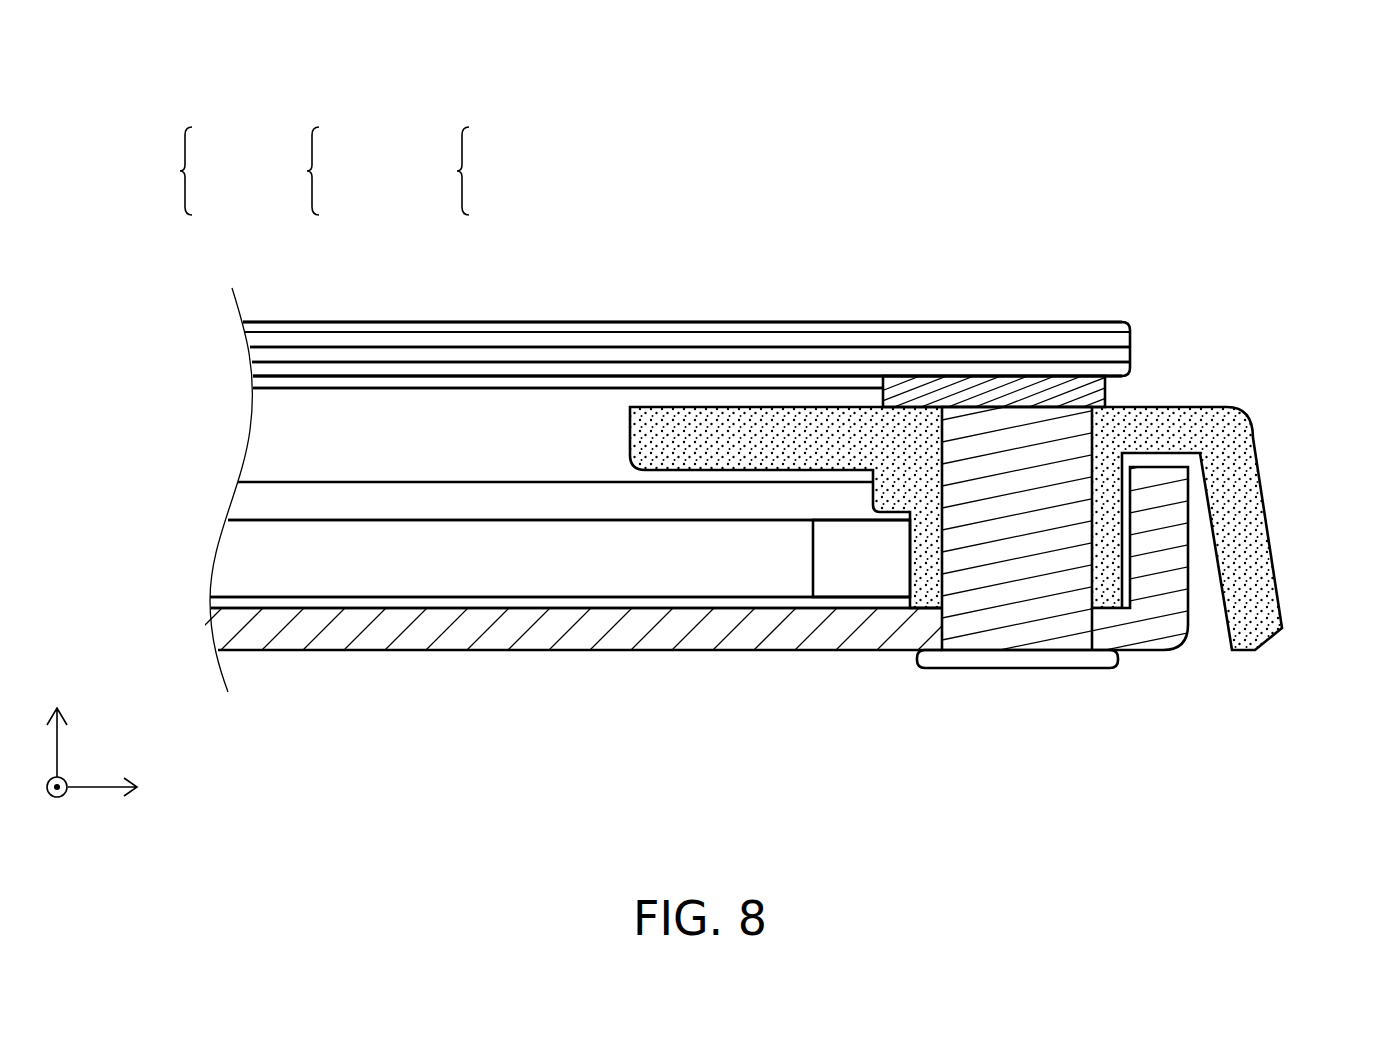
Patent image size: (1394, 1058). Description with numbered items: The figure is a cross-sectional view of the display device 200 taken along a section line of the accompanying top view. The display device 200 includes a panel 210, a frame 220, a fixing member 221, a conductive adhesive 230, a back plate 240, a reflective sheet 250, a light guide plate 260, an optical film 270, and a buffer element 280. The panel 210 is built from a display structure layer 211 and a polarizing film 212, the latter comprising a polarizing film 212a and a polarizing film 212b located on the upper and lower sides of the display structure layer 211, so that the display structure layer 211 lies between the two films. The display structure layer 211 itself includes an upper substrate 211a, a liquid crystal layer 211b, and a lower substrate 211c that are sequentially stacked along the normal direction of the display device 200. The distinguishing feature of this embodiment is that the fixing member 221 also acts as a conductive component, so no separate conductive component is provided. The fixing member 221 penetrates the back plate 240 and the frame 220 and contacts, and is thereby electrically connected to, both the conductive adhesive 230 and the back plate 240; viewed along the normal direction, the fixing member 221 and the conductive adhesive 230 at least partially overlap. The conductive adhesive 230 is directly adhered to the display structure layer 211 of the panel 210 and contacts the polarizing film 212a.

The display device 200 is at (127, 91).
The panel 210 is at (630, 265).
The display structure layer 211 is at (662, 252).
The polarizing film 212 is at (658, 271).
The upper substrate 211a is at (277, 340).
The liquid crystal layer 211b is at (277, 353).
The lower substrate 211c is at (277, 369).
The polarizing film 212a is at (302, 383).
The polarizing film 212b is at (303, 328).
The frame 220 is at (1240, 515).
The fixing member 221 is at (1020, 567).
The conductive adhesive 230 is at (997, 392).
The back plate 240 is at (493, 630).
The reflective sheet 250 is at (277, 605).
The light guide plate 260 is at (275, 565).
The optical film 270 is at (295, 500).
The buffer element 280 is at (860, 563).